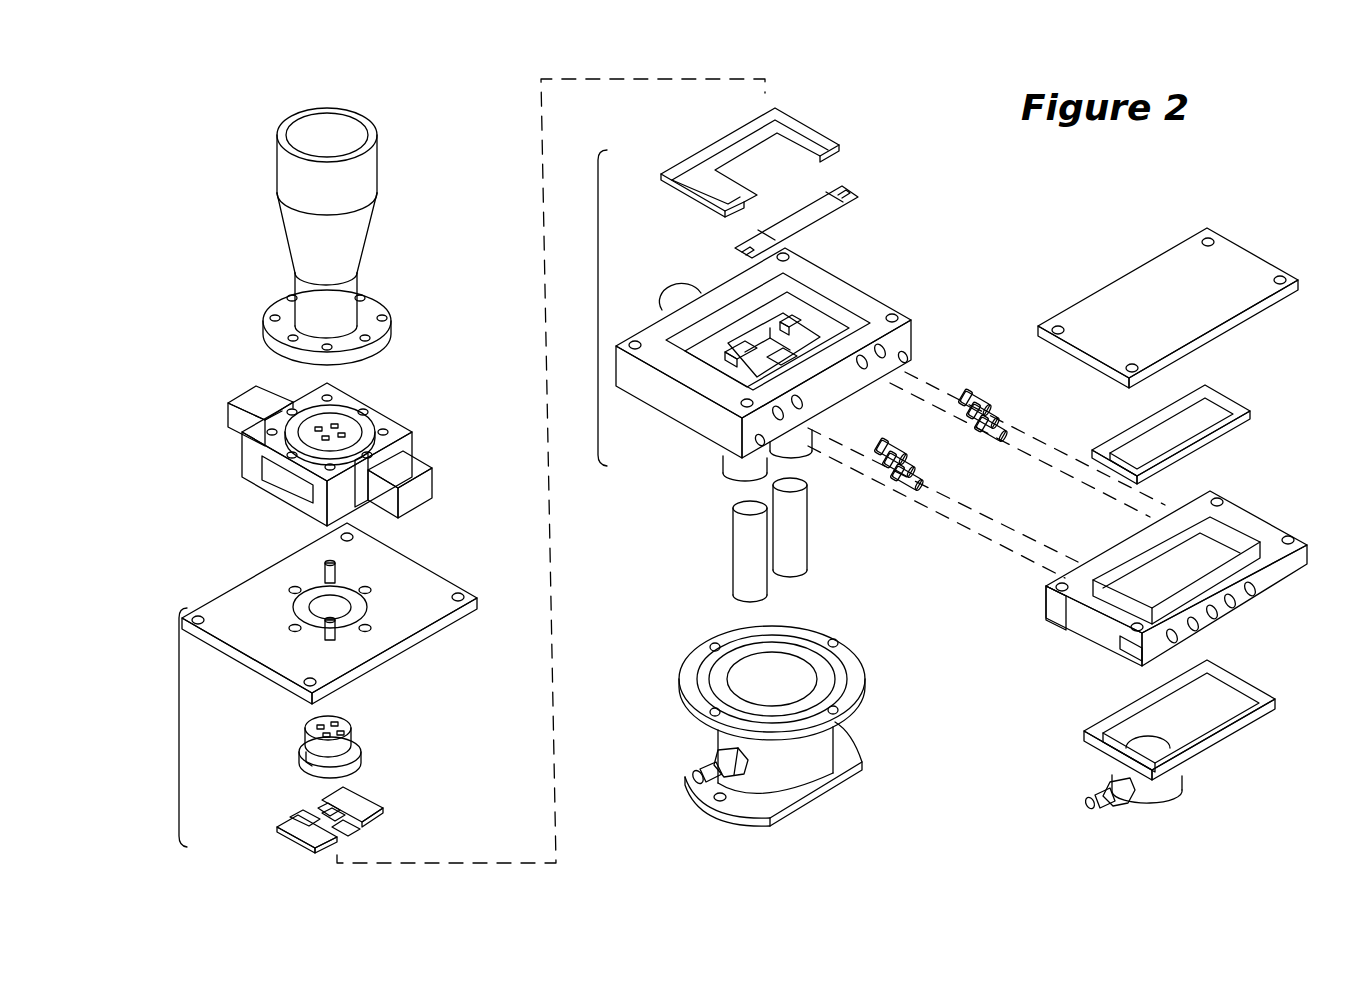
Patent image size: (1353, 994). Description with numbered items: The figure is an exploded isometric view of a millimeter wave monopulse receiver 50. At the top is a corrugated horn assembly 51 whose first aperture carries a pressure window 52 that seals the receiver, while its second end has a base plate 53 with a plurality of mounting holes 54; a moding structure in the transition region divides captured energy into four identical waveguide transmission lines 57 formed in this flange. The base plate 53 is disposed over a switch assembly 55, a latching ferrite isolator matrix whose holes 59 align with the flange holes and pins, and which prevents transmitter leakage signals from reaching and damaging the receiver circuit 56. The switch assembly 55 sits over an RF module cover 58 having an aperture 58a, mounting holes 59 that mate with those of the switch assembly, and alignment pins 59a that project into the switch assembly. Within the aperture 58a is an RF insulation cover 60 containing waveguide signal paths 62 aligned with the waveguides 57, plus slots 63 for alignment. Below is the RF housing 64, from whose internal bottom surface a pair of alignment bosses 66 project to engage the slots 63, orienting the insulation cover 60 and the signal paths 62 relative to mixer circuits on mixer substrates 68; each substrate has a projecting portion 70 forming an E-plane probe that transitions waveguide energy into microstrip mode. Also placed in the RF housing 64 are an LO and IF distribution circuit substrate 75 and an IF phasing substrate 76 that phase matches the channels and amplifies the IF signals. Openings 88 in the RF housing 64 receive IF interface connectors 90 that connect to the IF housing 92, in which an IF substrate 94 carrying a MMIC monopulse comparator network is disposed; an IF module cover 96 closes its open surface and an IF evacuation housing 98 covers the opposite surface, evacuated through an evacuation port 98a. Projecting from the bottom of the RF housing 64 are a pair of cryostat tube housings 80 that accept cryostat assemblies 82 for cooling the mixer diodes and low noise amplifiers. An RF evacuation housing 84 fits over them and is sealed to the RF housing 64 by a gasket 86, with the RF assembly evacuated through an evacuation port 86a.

The millimeter wave monopulse receiver 50 is at (1298, 166).
The corrugated horn assembly 51 is at (330, 222).
The pressure window 52 is at (350, 132).
The base plate 53 is at (387, 301).
The mounting holes 54 is at (268, 315).
The switch assembly 55 is at (346, 453).
The receiver circuit 56 is at (179, 733).
The waveguide transmission lines 57 is at (343, 430).
The RF module cover 58 is at (339, 612).
The aperture 58a is at (316, 601).
The mounting holes 59 is at (333, 397).
The alignment pins 59a is at (338, 571).
The RF insulation cover 60 is at (347, 734).
The waveguide signal paths 62 is at (336, 722).
The slots 63 is at (302, 778).
The RF housing 64 is at (781, 370).
The alignment bosses 66 is at (797, 322).
The mixer substrates 68 is at (336, 821).
The projecting portion 70 is at (314, 811).
The LO and IF distribution circuit substrate 75 is at (827, 134).
The IF phasing substrate 76 is at (857, 189).
The cryostat tube housings 80 is at (723, 463).
The cryostat assemblies 82 is at (732, 532).
The RF evacuation housing 84 is at (773, 709).
The gasket 86 is at (800, 643).
The evacuation port 86a is at (697, 772).
The openings 88 is at (780, 418).
The IF interface connectors 90 is at (941, 441).
The IF housing 92 is at (1248, 524).
The IF substrate 94 is at (1229, 396).
The IF module cover 96 is at (1253, 254).
The IF evacuation housing 98 is at (1166, 730).
The evacuation port 98a is at (1090, 798).